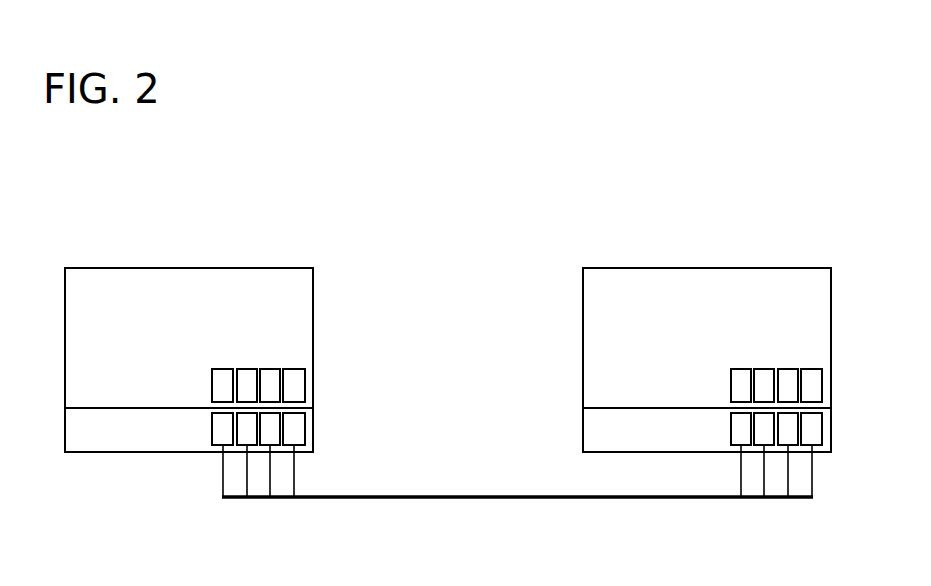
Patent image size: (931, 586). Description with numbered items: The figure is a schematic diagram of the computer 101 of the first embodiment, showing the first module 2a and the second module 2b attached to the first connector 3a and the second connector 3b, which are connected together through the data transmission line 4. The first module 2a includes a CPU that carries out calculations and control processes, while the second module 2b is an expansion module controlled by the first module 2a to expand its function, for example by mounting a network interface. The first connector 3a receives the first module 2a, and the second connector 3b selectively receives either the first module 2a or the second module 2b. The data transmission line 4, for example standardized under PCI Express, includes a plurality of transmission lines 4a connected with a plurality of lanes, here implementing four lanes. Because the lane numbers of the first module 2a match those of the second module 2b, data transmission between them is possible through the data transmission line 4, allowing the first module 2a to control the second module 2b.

The computer 101 is at (471, 216).
The first module 2a is at (776, 285).
The second module 2b is at (260, 285).
The first connector 3a is at (603, 428).
The second connector 3b is at (105, 430).
The data transmission line 4 is at (438, 500).
The transmission lines 4a is at (223, 473).